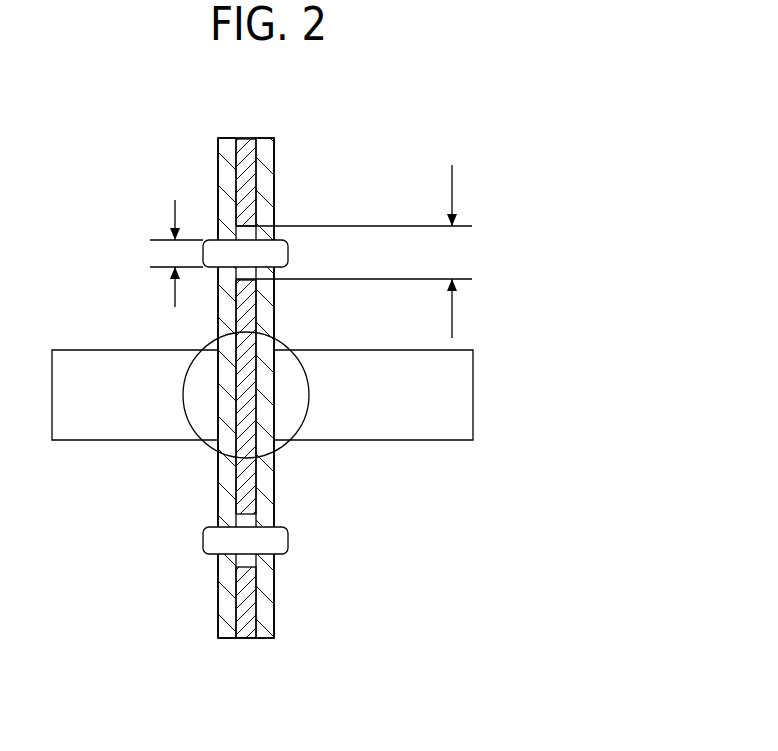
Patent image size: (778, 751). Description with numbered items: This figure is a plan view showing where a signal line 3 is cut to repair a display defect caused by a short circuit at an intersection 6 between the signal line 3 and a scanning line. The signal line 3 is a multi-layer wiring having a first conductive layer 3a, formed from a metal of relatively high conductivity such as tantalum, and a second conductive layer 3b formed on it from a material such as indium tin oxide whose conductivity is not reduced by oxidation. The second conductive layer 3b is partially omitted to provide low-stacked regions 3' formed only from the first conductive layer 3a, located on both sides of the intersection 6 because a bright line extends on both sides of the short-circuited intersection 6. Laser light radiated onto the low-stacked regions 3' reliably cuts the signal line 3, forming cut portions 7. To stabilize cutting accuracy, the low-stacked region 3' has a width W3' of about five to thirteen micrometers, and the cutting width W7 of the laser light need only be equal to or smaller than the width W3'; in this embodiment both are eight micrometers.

The signal line 3 is at (337, 381).
The first conductive layer 3a is at (267, 147).
The second conductive layer 3b is at (245, 139).
The low-stacked region 3' is at (354, 252).
The cut portion 7 is at (282, 258).
The intersection 6 is at (273, 443).
The cutting width W7 is at (176, 253).
The width of the low-stacked region W3' is at (450, 251).